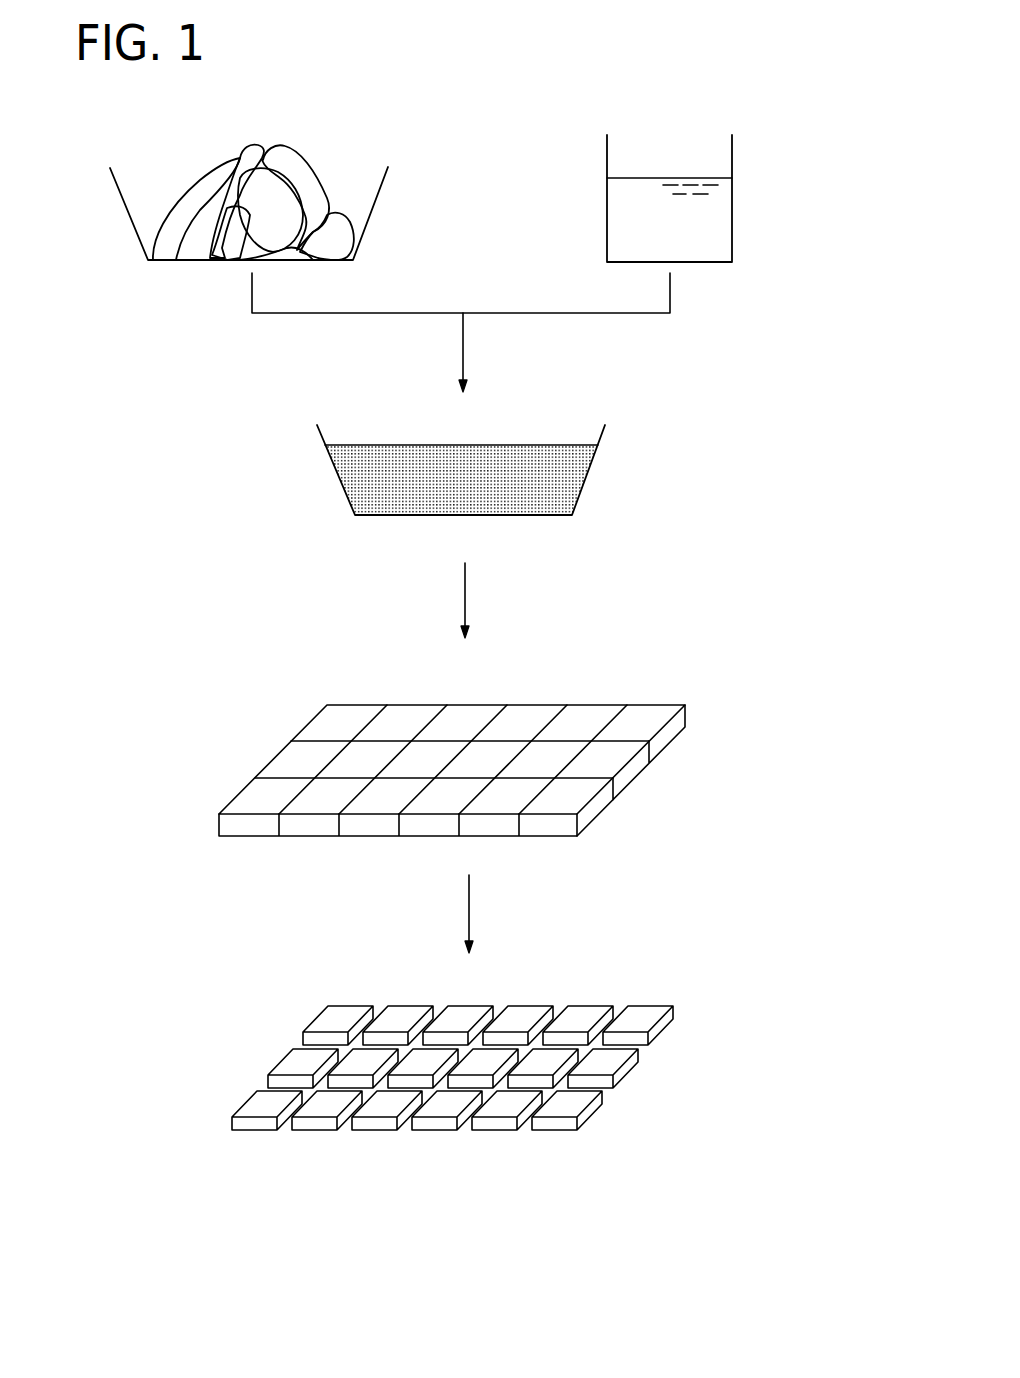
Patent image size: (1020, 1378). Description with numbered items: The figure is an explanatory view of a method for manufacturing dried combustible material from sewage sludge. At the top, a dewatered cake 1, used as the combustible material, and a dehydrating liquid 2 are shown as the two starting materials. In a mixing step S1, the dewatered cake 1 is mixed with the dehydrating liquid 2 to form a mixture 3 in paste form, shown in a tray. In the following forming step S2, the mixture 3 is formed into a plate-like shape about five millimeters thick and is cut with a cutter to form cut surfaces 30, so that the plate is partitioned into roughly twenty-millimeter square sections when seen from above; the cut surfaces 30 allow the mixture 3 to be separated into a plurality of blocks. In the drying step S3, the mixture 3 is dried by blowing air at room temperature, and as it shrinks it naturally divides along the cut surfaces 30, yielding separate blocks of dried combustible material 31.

The dewatered cake 1 is at (296, 168).
The dehydrating liquid 2 is at (636, 190).
The mixture 3 is at (560, 480).
The cut surfaces 30 is at (368, 722).
The dried combustible material 31 is at (650, 1018).
The mixing step S1 is at (463, 348).
The forming step S2 is at (465, 597).
The drying step S3 is at (469, 908).